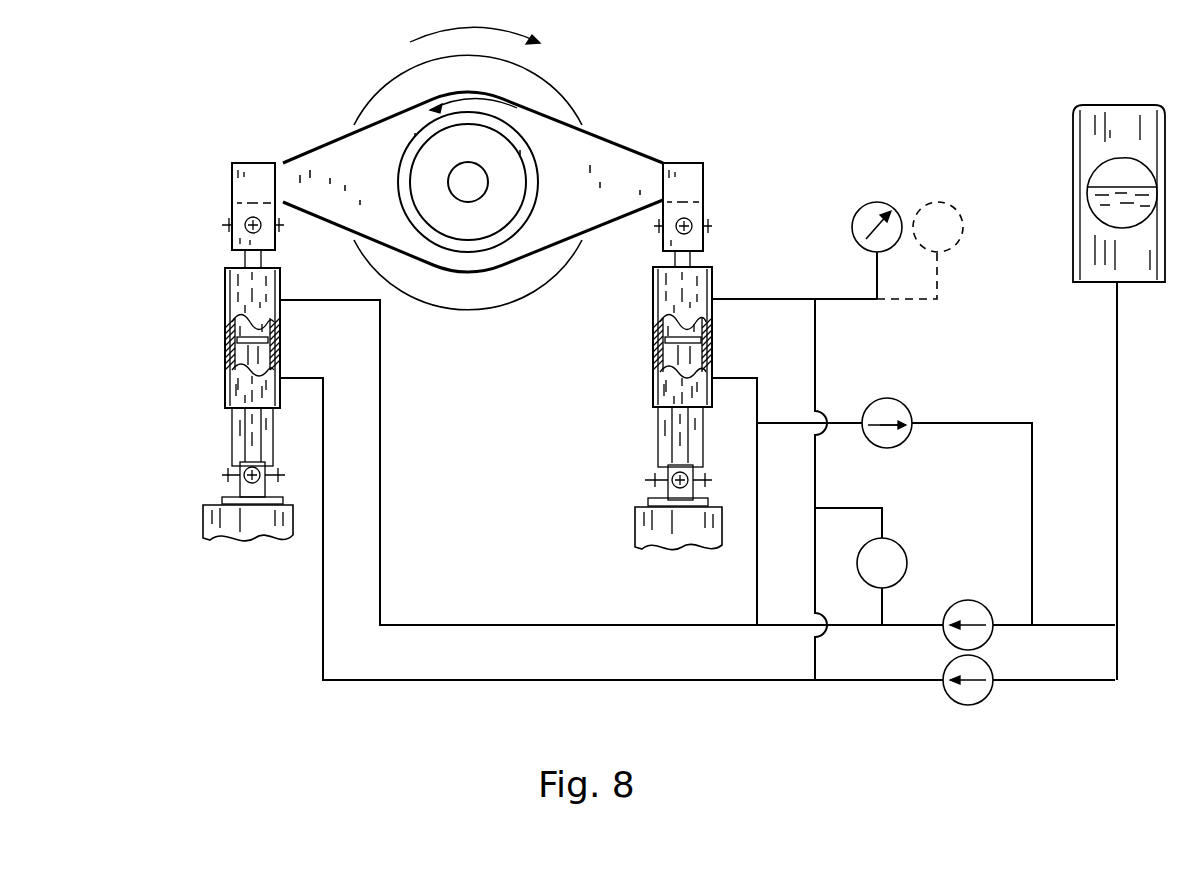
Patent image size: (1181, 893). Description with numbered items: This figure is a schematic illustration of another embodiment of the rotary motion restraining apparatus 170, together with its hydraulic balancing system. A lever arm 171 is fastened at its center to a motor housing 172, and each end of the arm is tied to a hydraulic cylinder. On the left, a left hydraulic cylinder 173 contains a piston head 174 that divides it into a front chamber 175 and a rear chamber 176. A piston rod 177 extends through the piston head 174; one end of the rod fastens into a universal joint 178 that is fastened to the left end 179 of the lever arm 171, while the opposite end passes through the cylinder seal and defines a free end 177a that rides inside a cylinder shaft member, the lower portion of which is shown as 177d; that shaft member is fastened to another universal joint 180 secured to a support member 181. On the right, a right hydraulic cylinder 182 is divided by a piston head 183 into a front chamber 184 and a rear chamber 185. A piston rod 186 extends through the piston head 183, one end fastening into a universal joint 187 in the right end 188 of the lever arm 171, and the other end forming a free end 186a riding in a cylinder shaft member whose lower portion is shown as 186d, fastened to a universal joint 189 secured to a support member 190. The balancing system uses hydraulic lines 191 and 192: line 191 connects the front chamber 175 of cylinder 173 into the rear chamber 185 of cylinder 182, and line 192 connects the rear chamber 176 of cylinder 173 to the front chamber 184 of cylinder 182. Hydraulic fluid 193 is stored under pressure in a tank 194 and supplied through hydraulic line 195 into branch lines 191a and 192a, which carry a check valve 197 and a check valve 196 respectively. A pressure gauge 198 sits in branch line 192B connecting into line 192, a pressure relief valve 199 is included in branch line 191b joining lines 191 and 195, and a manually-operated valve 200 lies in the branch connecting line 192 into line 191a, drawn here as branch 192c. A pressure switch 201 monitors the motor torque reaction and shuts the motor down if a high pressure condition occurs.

The restraining apparatus 170 is at (215, 42).
The lever arm 171 is at (608, 142).
The motor housing 172 is at (397, 75).
The left hydraulic cylinder 173 is at (225, 292).
The piston head 174 is at (240, 335).
The front chamber 175 is at (280, 330).
The rear chamber 176 is at (235, 355).
The piston rod 177 is at (238, 262).
The free end 177a is at (237, 393).
The piston rod lower portion 177d is at (232, 437).
The universal joint 178 is at (227, 222).
The left end 179 is at (292, 183).
The universal joint 180 is at (240, 488).
The support member 181 is at (218, 537).
The right hydraulic cylinder 182 is at (655, 290).
The piston head 183 is at (712, 323).
The front chamber 184 is at (660, 323).
The rear chamber 185 is at (660, 358).
The piston rod 186 is at (698, 258).
The free end 186a is at (653, 387).
The piston rod lower portion 186d is at (658, 430).
The universal joint 187 is at (708, 218).
The right end 188 is at (652, 160).
The universal joint 189 is at (650, 490).
The support member 190 is at (645, 528).
The hydraulic line 191 is at (382, 565).
The branch line 191a is at (900, 623).
The branch line 191b is at (978, 423).
The hydraulic line 192 is at (748, 297).
The branch line 192a is at (837, 683).
The branch line 192B is at (842, 302).
The hydraulic line branch 192c is at (852, 508).
The hydraulic fluid 193 is at (1078, 205).
The tank 194 is at (1075, 130).
The hydraulic line 195 is at (1117, 458).
The check valve 196 is at (988, 695).
The check valve 197 is at (958, 598).
The pressure gauge 198 is at (877, 202).
The pressure relief valve 199 is at (883, 398).
The manually-operated valve 200 is at (905, 543).
The pressure switch 201 is at (918, 210).